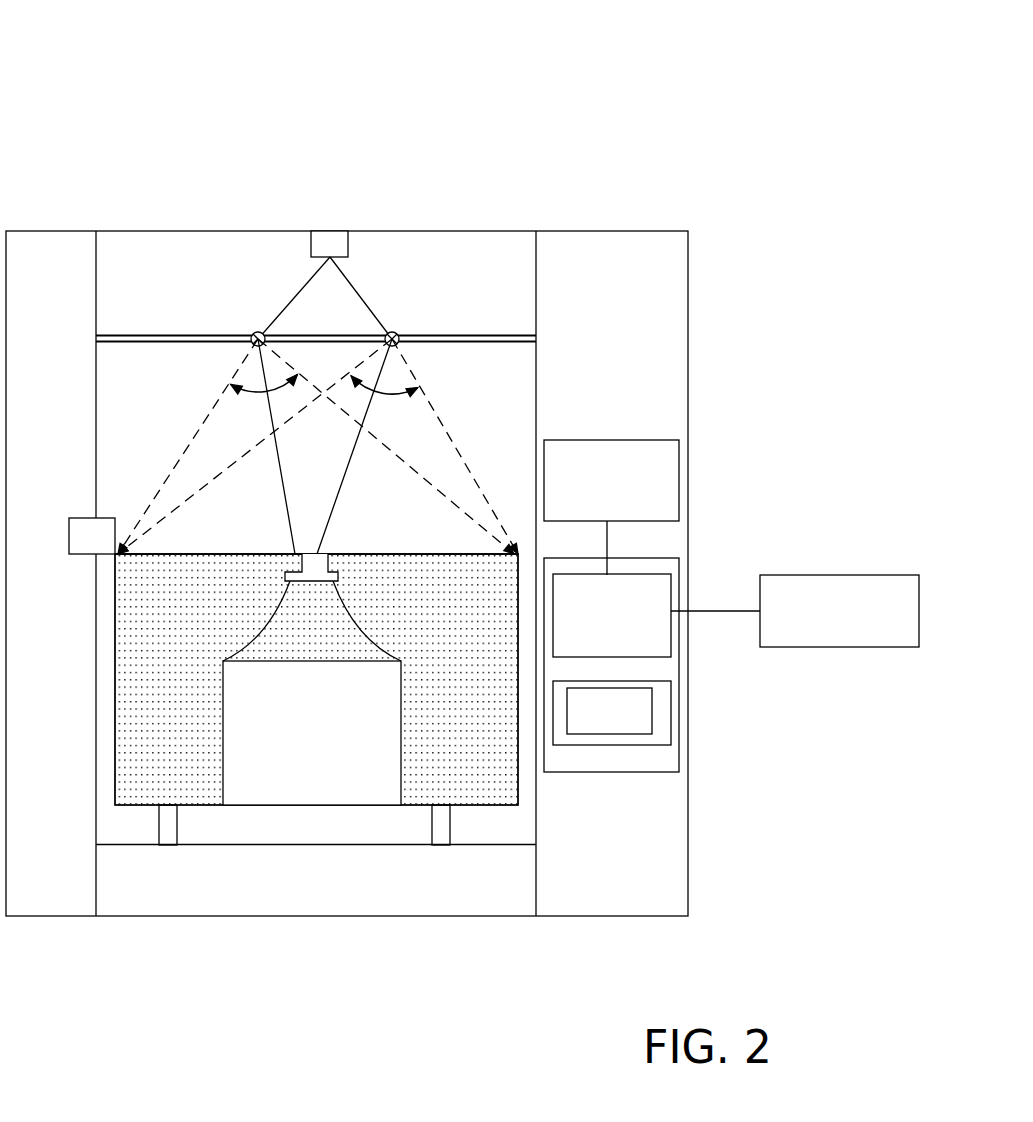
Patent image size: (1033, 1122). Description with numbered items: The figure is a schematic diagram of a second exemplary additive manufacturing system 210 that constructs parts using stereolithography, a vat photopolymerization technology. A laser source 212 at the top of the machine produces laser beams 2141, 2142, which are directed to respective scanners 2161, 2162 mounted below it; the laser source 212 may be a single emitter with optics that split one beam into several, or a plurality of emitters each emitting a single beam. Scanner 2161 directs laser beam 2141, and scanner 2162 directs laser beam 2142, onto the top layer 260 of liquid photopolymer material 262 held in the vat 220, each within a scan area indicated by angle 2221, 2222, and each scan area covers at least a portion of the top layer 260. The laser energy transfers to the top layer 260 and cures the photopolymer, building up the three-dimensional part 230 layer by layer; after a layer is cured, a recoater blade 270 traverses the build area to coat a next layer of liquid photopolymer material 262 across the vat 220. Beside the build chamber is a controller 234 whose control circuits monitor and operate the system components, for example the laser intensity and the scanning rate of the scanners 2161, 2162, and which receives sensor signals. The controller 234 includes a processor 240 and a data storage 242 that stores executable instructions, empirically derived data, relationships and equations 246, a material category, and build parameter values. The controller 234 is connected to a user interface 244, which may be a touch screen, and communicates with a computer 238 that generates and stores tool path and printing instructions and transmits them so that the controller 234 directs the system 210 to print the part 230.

The additive manufacturing system 210 is at (148, 108).
The laser source 212 is at (329, 231).
The laser beam 2141 is at (277, 453).
The laser beam 2142 is at (348, 463).
The scanner 2161 is at (254, 333).
The scanner 2162 is at (399, 334).
The vat 220 is at (113, 773).
The angle 2221 is at (245, 394).
The angle 2222 is at (383, 398).
The 3D part 230 is at (302, 562).
The controller 234 is at (652, 762).
The computer 238 is at (795, 611).
The processor 240 is at (650, 637).
The data storage 242 is at (672, 707).
The user interface 244 is at (670, 475).
The relationships and equations 246 is at (620, 726).
The top layer 260 is at (152, 551).
The liquid photopolymer material 262 is at (140, 668).
The recoater blade 270 is at (92, 556).